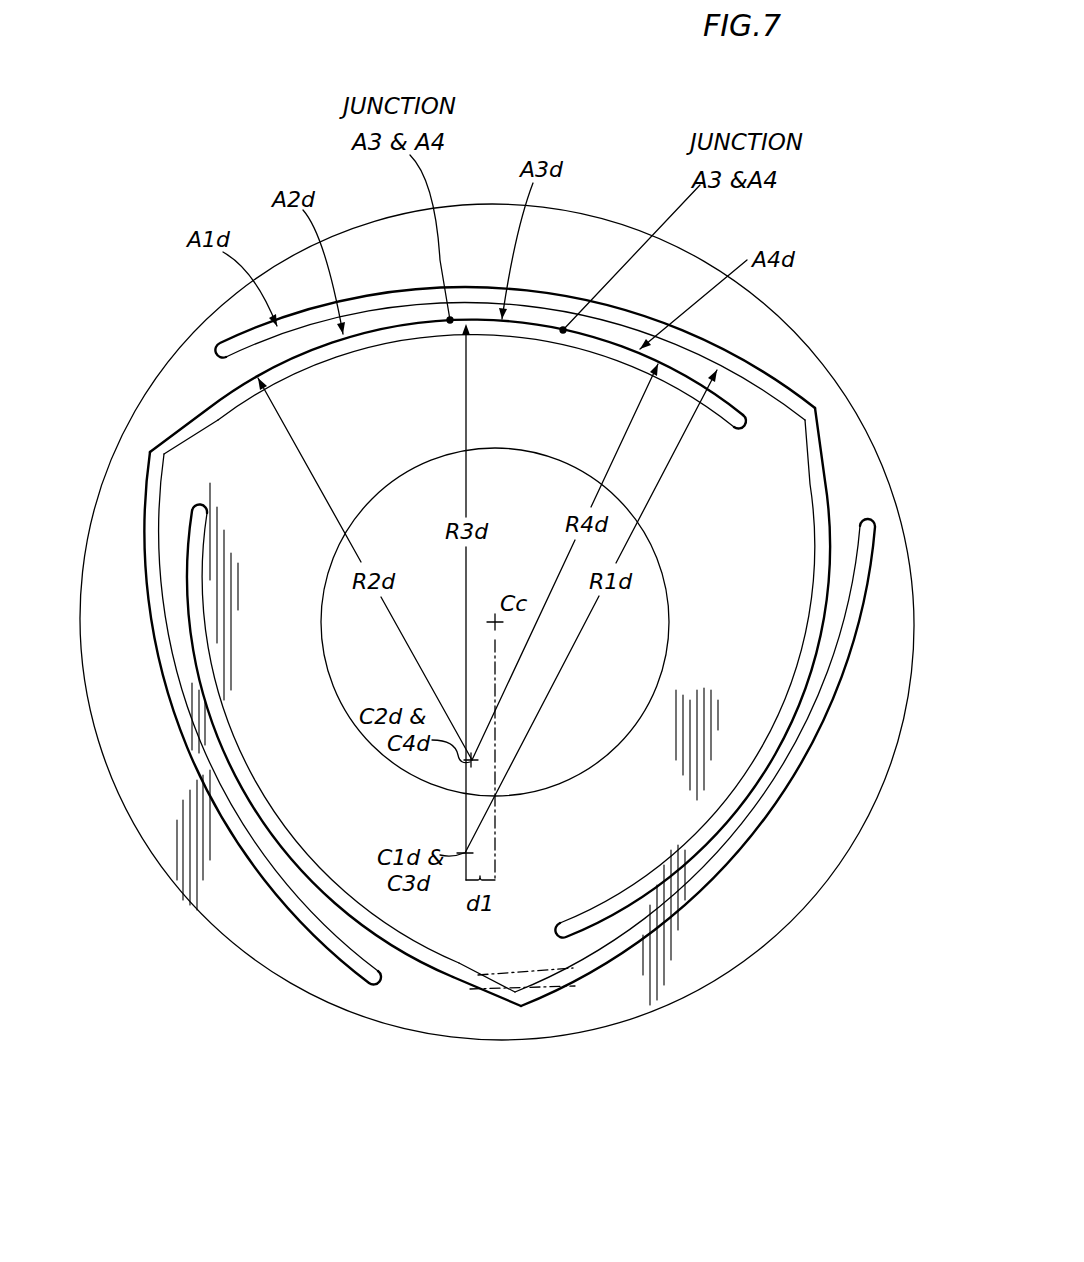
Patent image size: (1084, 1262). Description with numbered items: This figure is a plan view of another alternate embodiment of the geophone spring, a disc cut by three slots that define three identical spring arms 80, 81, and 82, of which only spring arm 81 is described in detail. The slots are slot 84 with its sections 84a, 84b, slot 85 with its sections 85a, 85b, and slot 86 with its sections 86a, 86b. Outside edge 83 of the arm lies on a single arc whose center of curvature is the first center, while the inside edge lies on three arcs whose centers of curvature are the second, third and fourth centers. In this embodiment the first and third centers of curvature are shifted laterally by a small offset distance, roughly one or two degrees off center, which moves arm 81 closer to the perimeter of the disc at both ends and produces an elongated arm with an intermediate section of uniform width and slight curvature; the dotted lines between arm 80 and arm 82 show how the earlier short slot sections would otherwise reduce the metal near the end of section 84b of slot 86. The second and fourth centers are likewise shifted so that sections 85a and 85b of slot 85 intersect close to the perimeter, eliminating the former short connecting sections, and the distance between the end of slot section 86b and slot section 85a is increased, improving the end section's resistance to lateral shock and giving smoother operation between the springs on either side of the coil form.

The spring arm 80 is at (273, 853).
The spring arm 81 is at (540, 313).
The spring arm 82 is at (835, 603).
The outside edge 83 is at (563, 308).
The slot 84 is at (402, 292).
The slot section 84a is at (707, 353).
The slot section 84b is at (825, 547).
The slot 85 is at (197, 401).
The slot section 85a is at (203, 767).
The slot section 85b is at (305, 360).
The slot 86 is at (457, 985).
The slot section 86a is at (825, 668).
The slot section 86b is at (250, 787).